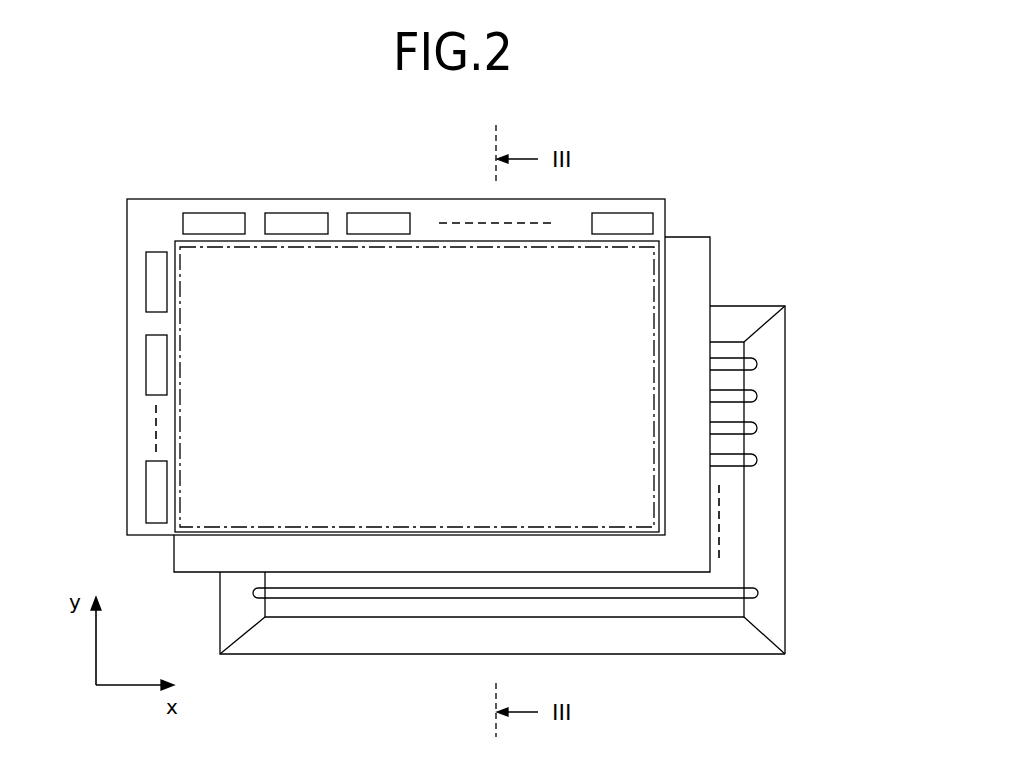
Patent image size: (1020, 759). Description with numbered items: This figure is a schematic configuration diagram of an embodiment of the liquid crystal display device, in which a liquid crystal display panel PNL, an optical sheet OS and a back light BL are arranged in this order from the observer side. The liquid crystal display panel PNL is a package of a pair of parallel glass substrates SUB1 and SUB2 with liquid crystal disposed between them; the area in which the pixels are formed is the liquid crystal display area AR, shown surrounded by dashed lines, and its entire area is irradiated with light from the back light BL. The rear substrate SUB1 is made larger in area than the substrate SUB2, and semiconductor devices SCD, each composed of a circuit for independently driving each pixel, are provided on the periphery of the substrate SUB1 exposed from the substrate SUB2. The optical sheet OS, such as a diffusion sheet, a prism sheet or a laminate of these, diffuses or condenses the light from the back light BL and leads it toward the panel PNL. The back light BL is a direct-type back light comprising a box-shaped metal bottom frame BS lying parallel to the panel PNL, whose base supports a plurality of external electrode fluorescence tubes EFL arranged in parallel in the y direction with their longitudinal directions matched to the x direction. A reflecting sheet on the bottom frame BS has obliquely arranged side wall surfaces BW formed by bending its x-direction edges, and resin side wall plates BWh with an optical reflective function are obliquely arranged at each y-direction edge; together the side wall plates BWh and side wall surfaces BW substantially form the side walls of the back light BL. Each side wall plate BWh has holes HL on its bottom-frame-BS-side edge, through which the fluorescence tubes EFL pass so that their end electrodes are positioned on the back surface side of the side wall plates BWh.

The liquid crystal display panel PNL is at (240, 184).
The substrate SUB1 is at (127, 275).
The substrate SUB2 is at (175, 437).
The liquid crystal display area AR is at (417, 387).
The semiconductor device SCD is at (378, 222).
The optical sheet OS is at (690, 258).
The back light BL is at (788, 497).
The side wall surface BW is at (735, 323).
The side wall plate BWh is at (765, 538).
The bottom frame BS is at (635, 605).
The hole HL is at (747, 358).
The external electrode fluorescence tube EFL is at (726, 458).